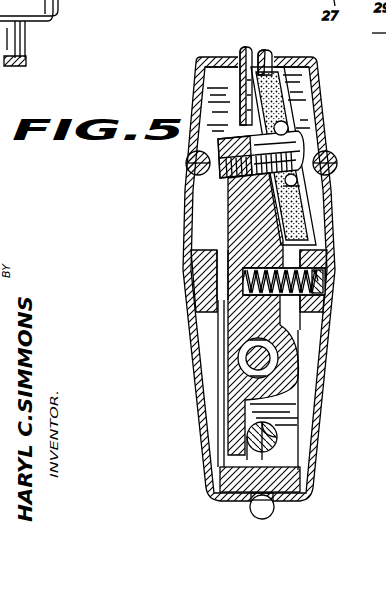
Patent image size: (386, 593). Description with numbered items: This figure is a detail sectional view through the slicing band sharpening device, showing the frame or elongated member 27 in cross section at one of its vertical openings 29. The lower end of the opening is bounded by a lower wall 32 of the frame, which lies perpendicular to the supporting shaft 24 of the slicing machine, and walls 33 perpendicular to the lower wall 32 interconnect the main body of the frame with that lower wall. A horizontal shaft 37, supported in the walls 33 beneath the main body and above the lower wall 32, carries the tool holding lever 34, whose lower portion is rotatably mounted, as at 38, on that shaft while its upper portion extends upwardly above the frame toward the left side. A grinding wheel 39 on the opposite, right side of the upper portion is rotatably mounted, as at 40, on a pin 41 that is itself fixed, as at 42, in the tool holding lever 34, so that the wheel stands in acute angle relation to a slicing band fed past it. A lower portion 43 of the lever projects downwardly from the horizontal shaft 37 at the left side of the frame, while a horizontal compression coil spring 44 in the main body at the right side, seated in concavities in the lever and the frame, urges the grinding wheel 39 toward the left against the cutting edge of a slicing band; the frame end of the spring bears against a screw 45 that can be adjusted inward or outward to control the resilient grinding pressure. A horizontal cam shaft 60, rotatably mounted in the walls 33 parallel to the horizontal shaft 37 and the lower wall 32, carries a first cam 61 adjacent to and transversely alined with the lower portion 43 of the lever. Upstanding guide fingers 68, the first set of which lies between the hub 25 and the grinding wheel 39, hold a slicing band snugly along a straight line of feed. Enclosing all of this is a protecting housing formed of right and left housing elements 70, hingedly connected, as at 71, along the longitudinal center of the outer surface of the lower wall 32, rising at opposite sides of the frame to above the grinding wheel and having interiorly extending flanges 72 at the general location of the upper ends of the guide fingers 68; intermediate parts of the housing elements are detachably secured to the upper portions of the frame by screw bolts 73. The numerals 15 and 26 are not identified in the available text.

The housing interior 15 is at (248, 108).
The supporting shaft 24 is at (27, 58).
The hub 25 is at (60, 9).
The leg 26 is at (27, 32).
The frame or elongated member 27 is at (330, 258).
The vertical opening 29 is at (222, 296).
The lower wall 32 is at (300, 481).
The walls 33 is at (305, 399).
The tool holding lever 34 is at (248, 223).
The horizontal shaft 37 is at (270, 360).
The rotatable mounting 38 is at (278, 345).
The grinding wheel 39 is at (290, 101).
The rotatable mounting 40 is at (289, 130).
The pin 41 is at (298, 160).
The fixing 42 is at (237, 139).
The lower portion of tool holding lever 43 is at (235, 437).
The horizontal compression coil spring 44 is at (243, 282).
The screw 45 is at (328, 287).
The horizontal cam shaft 60 is at (277, 446).
The first cam 61 is at (280, 430).
The guide finger 68 is at (264, 50).
The housing element 70 is at (332, 217).
The hinge connection 71 is at (272, 507).
The interiorly extending flange 72 is at (232, 57).
The screw bolt 73 is at (190, 172).